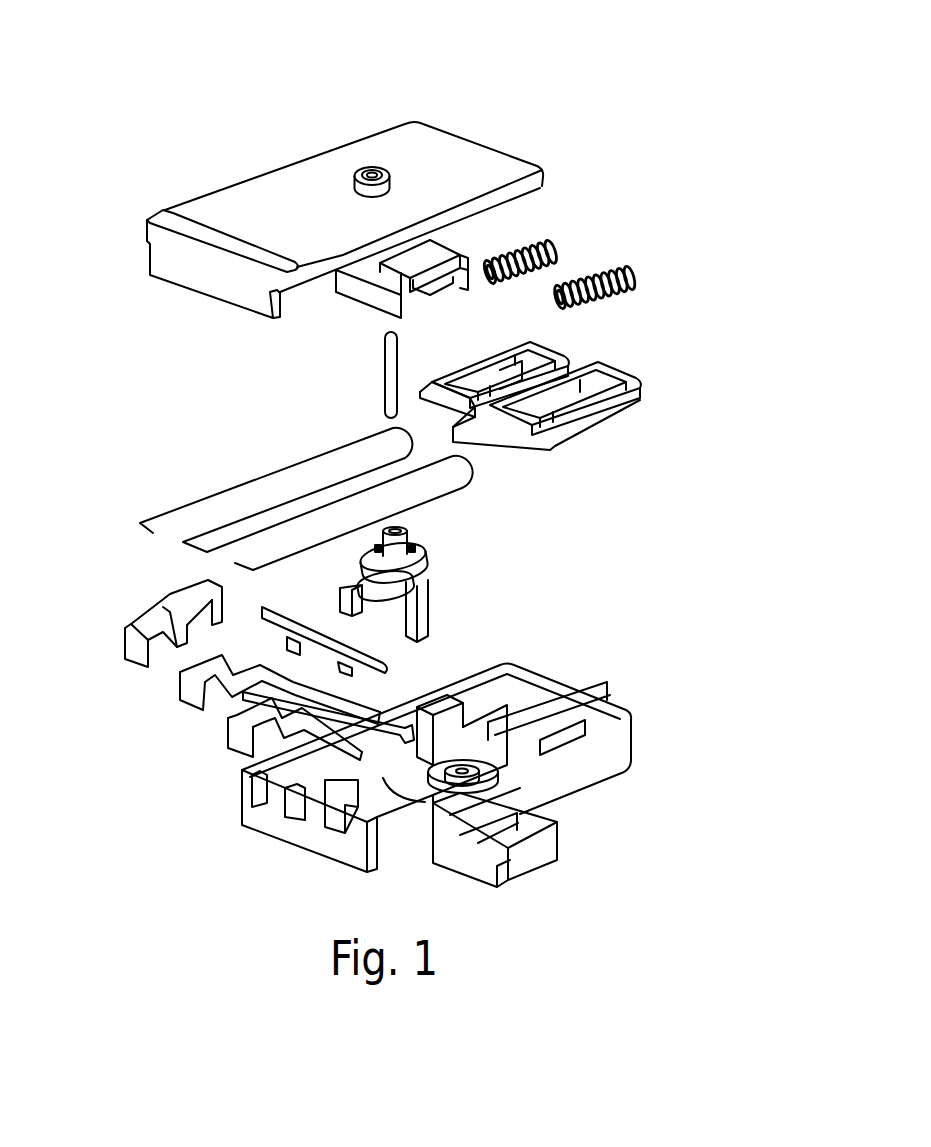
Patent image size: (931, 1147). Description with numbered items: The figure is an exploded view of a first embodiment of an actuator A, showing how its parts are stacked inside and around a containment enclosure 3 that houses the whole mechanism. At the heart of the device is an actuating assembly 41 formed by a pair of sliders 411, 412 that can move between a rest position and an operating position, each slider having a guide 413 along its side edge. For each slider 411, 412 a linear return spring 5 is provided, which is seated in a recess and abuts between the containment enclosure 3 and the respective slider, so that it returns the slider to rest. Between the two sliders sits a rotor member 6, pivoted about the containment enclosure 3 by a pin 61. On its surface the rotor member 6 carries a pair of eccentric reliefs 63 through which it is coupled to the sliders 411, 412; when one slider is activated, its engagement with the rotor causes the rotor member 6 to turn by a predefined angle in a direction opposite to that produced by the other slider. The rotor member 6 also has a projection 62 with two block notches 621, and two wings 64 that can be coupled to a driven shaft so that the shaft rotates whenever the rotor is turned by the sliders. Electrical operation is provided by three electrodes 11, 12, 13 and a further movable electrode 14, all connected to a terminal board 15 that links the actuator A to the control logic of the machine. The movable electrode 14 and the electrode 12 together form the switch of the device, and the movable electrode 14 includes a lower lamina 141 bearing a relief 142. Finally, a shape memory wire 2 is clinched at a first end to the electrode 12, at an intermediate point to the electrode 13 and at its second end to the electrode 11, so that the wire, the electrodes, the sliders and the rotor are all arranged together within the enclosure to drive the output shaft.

The actuator A is at (703, 138).
The containment enclosure 3 is at (257, 203).
The return spring 5 is at (558, 238).
The actuating assembly 41 is at (612, 413).
The slider 411 is at (567, 353).
The slider 412 is at (600, 420).
The guide 413 is at (573, 420).
The pin 61 is at (387, 368).
The shape memory wire 2 is at (245, 480).
The rotor member 6 is at (438, 582).
The eccentric relief 63 is at (432, 548).
The projection 62 is at (357, 600).
The block notch 621 is at (345, 600).
The wing 64 is at (430, 623).
The electrode 12 is at (137, 643).
The movable electrode 14 is at (315, 763).
The lower lamina 141 is at (312, 657).
The relief 142 is at (348, 672).
The electrode 13 is at (200, 688).
The electrode 11 is at (245, 738).
The terminal board 15 is at (530, 873).